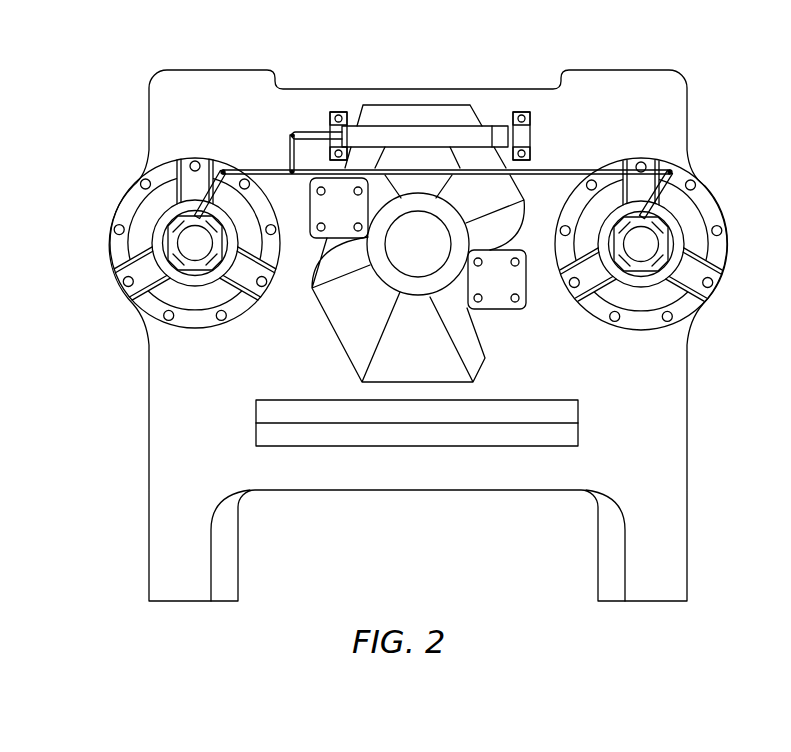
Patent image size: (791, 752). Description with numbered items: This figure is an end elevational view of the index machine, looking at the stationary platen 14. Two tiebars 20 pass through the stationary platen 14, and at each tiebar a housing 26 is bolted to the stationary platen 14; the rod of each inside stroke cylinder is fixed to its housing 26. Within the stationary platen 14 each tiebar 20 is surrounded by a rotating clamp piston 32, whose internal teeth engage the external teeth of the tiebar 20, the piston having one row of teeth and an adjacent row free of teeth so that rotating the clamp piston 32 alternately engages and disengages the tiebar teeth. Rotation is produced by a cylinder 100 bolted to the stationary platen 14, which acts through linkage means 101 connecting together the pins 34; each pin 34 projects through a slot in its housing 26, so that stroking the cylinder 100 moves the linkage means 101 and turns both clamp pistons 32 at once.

The stationary platen 14 is at (165, 427).
The tiebar 20 is at (152, 235).
The housing 26 is at (120, 260).
The clamp piston 32 is at (197, 286).
The pin 34 is at (212, 166).
The cylinder 100 is at (413, 135).
The linkage means 101 is at (268, 170).